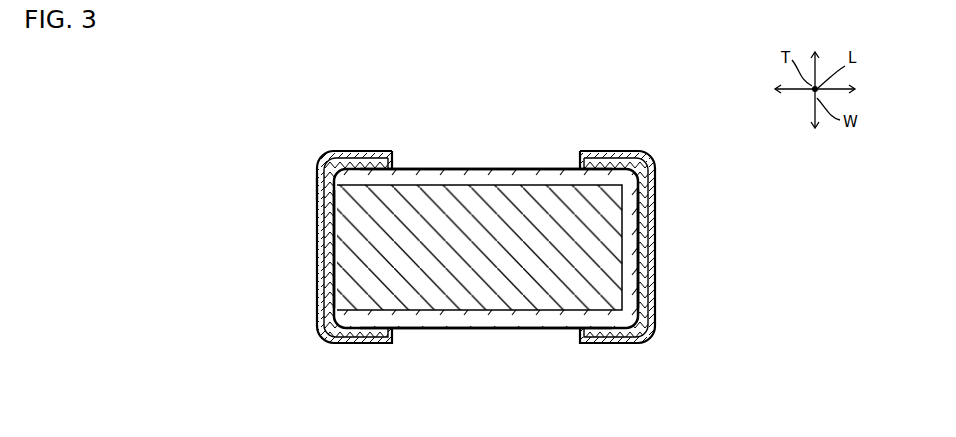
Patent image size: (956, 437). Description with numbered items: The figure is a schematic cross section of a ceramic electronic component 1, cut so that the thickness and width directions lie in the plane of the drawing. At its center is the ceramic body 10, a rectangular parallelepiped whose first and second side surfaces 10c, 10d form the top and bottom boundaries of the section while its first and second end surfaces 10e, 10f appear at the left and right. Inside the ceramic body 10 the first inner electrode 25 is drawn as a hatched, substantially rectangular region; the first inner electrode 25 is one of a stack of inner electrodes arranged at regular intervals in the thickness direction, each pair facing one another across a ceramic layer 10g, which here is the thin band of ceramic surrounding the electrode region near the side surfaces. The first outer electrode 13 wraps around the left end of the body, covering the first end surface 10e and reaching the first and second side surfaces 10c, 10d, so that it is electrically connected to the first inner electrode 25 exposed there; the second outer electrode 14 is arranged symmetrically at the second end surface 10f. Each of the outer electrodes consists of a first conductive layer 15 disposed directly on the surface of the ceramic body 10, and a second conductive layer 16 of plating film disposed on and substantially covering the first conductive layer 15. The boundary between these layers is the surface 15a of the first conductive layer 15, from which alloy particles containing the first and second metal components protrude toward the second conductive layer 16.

The ceramic electronic component 1 is at (646, 110).
The ceramic body 10 is at (482, 257).
The first side surface 10c is at (473, 168).
The second side surface 10d is at (489, 329).
The first end surface 10e is at (333, 247).
The second end surface 10f is at (641, 250).
The ceramic layer 10g is at (556, 321).
The first outer electrode 13 is at (437, 247).
The second outer electrode 14 is at (660, 292).
The first conductive layer 15 is at (320, 278).
The surface of the first conductive layer 15a is at (317, 187).
The second conductive layer 16 is at (318, 313).
The first inner electrode 25 is at (435, 312).